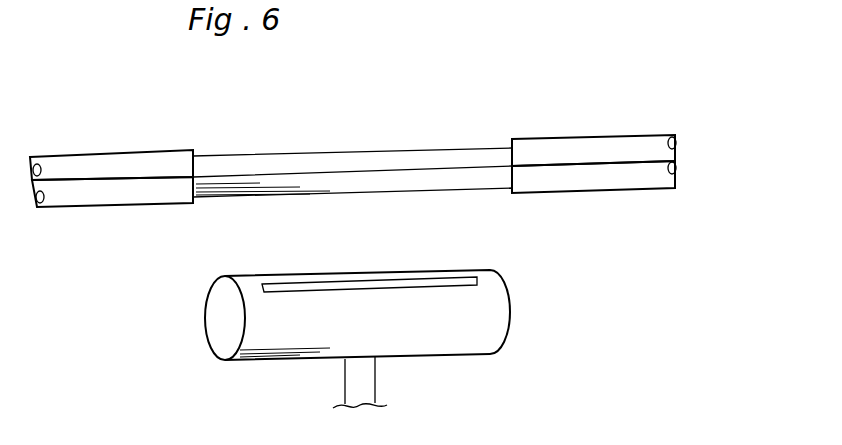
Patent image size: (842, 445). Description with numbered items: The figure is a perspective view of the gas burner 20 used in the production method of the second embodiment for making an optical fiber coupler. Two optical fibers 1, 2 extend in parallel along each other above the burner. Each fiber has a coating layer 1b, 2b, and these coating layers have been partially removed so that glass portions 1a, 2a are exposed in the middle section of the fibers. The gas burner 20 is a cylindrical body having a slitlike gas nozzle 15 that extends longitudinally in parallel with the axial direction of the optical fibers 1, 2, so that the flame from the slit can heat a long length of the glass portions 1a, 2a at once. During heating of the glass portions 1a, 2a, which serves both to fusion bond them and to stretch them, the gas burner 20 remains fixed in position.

The optical fiber 1 is at (555, 128).
The glass portion 1a is at (345, 150).
The coating layer 1b is at (120, 150).
The optical fiber 2 is at (558, 196).
The glass portion 2a is at (390, 193).
The coating layer 2b is at (108, 208).
The slitlike gas nozzle 15 is at (292, 290).
The gas burner 20 is at (478, 348).